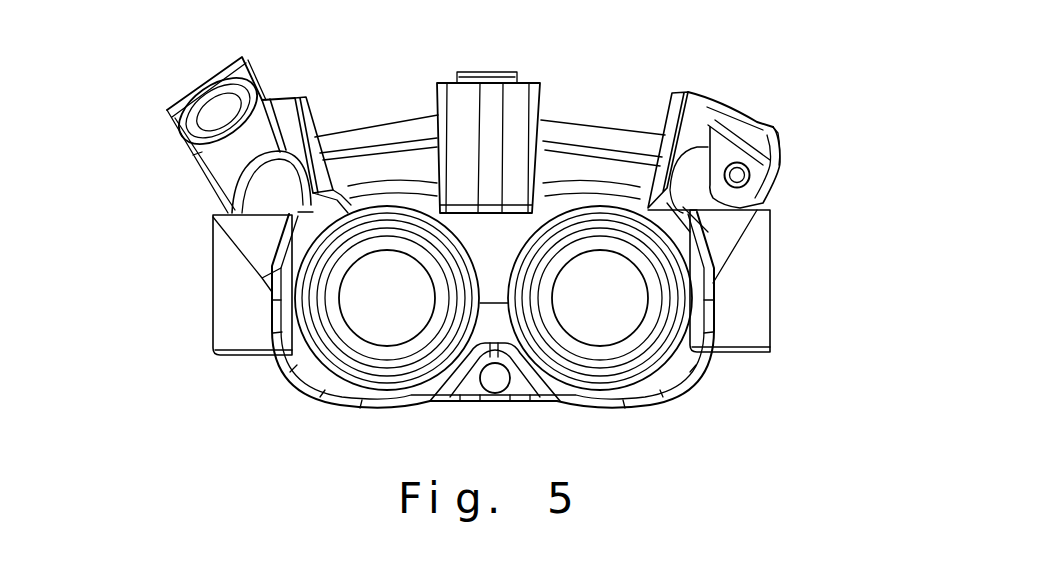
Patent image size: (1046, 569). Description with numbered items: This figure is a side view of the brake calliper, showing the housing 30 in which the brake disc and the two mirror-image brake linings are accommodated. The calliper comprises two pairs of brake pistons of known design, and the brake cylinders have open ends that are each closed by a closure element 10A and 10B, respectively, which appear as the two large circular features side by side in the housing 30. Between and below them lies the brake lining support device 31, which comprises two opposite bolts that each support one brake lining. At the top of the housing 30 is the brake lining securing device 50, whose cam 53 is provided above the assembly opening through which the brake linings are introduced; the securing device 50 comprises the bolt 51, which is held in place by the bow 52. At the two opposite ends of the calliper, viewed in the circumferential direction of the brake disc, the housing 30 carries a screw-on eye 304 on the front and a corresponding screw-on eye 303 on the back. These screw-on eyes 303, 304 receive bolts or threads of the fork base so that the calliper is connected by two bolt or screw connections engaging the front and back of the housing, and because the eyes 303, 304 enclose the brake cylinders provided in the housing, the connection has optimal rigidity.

The housing 30 is at (585, 158).
The closure element 10A is at (367, 321).
The closure element 10B is at (608, 325).
The brake lining support device 31 is at (495, 383).
The screw-on eye 303 is at (740, 307).
The screw-on eye 304 is at (237, 311).
The brake lining securing device 50 is at (789, 130).
The bolt 51 is at (737, 176).
The bow 52 is at (752, 133).
The cam 53 is at (773, 135).